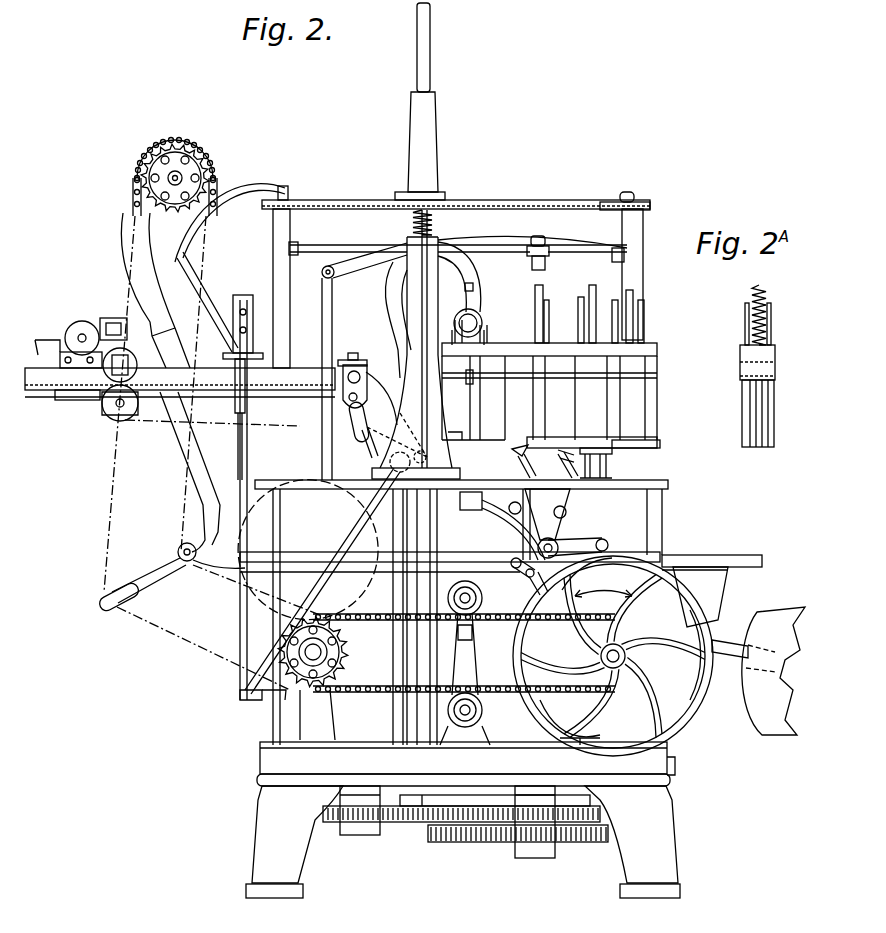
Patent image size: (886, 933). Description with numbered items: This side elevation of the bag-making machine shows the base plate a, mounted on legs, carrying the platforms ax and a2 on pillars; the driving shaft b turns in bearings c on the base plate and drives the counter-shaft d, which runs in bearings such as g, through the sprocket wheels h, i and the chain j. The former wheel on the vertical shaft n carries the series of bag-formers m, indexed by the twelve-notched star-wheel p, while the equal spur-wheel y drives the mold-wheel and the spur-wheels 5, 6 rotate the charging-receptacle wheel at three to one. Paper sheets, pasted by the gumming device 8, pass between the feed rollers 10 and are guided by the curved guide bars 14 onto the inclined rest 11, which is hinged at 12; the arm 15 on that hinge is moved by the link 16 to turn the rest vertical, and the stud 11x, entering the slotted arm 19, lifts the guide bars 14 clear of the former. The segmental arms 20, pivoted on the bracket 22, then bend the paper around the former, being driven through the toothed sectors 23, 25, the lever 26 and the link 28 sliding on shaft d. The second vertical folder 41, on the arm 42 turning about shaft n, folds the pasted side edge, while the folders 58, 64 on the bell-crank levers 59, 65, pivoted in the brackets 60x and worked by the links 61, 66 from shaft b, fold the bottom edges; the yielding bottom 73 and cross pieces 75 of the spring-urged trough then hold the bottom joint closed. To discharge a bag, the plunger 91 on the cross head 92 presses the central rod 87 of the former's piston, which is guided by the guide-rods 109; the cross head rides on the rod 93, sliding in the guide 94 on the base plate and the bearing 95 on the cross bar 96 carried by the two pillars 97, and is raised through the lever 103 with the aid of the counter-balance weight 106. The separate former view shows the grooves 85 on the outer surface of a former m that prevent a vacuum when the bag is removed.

In FIG. 2, the rod 93 is at (431, 32).
In FIG. 2, the bearing 95 is at (436, 128).
In FIG. 2, the cross bar 96 is at (550, 209).
In FIG. 2, the pillars 97 is at (273, 218).
In FIG. 2, the bracket 22 is at (438, 250).
In FIG. 2, the cross head 92 is at (478, 252).
In FIG. 2, the plunger 91 is at (545, 263).
In FIG. 2, the toothed sector 23 is at (484, 320).
In FIG. 2, the toothed sector 25 is at (481, 287).
In FIG. 2, the lever 26 is at (357, 271).
In FIG. 2, the segmental arms 20 is at (383, 308).
In FIG. 2, the central rod 87 is at (543, 298).
In FIG. 2A, the central rod 87 is at (762, 298).
In FIG. 2, the guide-rods 109 is at (549, 321).
In FIG. 2A, the guide-rods 109 is at (771, 321).
In FIG. 2, the bag-formers m is at (664, 398).
In FIG. 2A, the bag-formers m is at (775, 363).
In FIG. 2, the second vertical folding plate 41 is at (473, 382).
In FIG. 2, the yielding bottom of the trough 73 is at (622, 440).
In FIG. 2, the cross pieces 75 is at (655, 452).
In FIG. 2, the folder 58 is at (511, 451).
In FIG. 2, the folder 64 is at (552, 454).
In FIG. 2, the bell-crank lever 59 is at (518, 466).
In FIG. 2, the bell-crank lever 65 is at (556, 470).
In FIG. 2, the platform ax is at (344, 489).
In FIG. 2, the bearing or guide 94 is at (418, 540).
In FIG. 2, the platform a2 is at (302, 560).
In FIG. 2, the arm 42 is at (500, 516).
In FIG. 2, the brackets 60x is at (562, 503).
In FIG. 2, the link 16 is at (360, 548).
In FIG. 2, the counter-shaft d is at (320, 650).
In FIG. 2, the sprocket wheel i is at (340, 665).
In FIG. 2, the bearing g is at (308, 610).
In FIG. 2, the chain j is at (478, 630).
In FIG. 2, the driving shaft b is at (600, 657).
In FIG. 2, the sprocket wheel h is at (578, 636).
In FIG. 2, the bearings c is at (596, 705).
In FIG. 2, the vertical shaft n is at (530, 722).
In FIG. 2, the link 61 is at (587, 574).
In FIG. 2, the link 66 is at (608, 575).
In FIG. 2, the lever 103 is at (727, 640).
In FIG. 2, the counter-balance weight 106 is at (775, 620).
In FIG. 2, the base plate a is at (463, 820).
In FIG. 2, the star-wheel p is at (440, 795).
In FIG. 2, the spur-wheel 5 is at (482, 806).
In FIG. 2, the spur-wheel 6 is at (340, 812).
In FIG. 2, the spur-wheel y is at (468, 842).
In FIG. 2, the pasting or gumming device 8 is at (64, 336).
In FIG. 2, the feed rollers 10 is at (348, 382).
In FIG. 2, the link 28 is at (323, 335).
In FIG. 2, the curved guide bars 14 is at (393, 372).
In FIG. 2, the inclined rest 11 is at (400, 428).
In FIG. 2, the stud 11x is at (393, 435).
In FIG. 2, the arm 15 is at (397, 458).
In FIG. 2, the hinge-pivot 12 is at (426, 458).
In FIG. 2, the arm 19 is at (358, 445).
In FIG. 2A, the grooves 85 is at (768, 430).